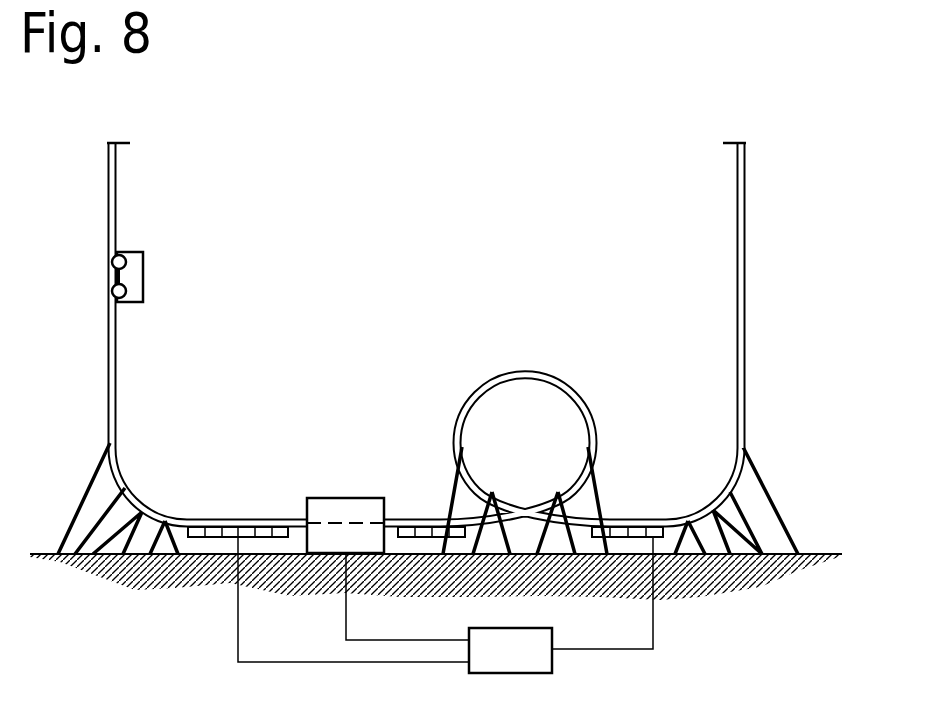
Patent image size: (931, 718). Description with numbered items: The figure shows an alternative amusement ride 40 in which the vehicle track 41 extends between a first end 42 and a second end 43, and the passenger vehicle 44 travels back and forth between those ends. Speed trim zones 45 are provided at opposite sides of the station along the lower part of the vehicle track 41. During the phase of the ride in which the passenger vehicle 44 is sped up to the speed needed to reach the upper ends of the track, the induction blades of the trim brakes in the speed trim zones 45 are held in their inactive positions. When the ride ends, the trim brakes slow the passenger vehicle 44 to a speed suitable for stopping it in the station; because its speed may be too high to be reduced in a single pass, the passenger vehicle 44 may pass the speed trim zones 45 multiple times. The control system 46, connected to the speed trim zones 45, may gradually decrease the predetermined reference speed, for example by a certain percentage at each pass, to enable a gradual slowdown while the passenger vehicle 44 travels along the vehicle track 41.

The amusement ride 40 is at (762, 219).
The vehicle track 41 is at (740, 318).
The first end 42 is at (97, 151).
The second end 43 is at (730, 158).
The passenger vehicle 44 is at (155, 279).
The speed trim zones 45 is at (243, 512).
The control system 46 is at (514, 636).